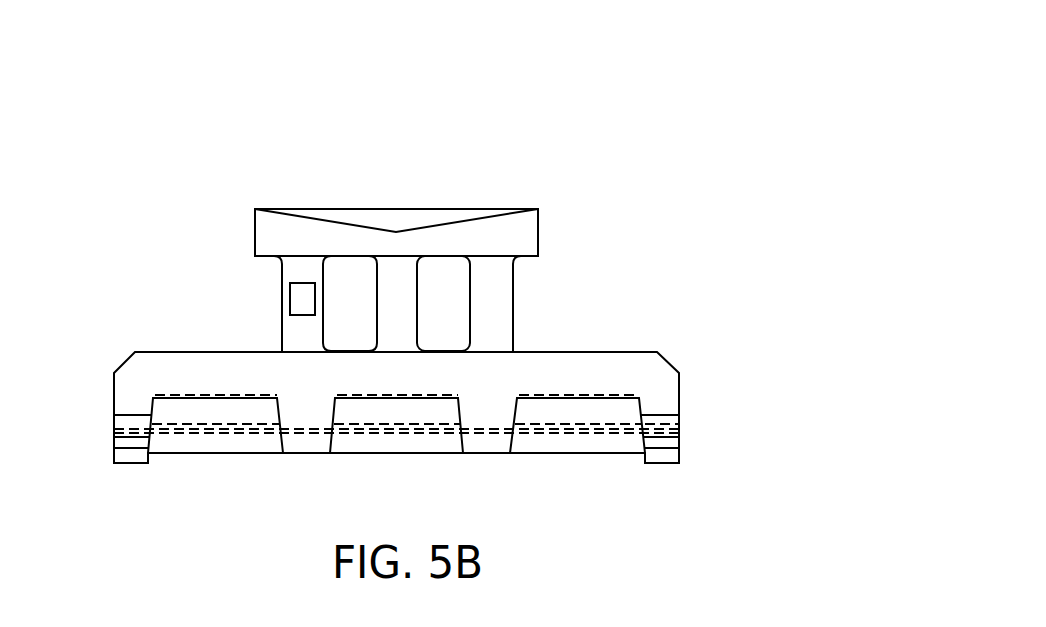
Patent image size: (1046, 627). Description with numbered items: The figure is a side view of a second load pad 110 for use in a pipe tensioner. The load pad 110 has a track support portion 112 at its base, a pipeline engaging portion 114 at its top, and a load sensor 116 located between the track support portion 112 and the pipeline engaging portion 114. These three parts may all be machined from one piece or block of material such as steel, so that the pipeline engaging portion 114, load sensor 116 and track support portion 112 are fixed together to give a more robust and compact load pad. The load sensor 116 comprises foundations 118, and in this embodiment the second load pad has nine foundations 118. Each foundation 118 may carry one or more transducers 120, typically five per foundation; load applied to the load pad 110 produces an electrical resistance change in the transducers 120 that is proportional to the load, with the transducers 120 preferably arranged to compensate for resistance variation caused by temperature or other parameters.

The second load pad 110 is at (492, 96).
The track support portion 112 is at (665, 393).
The pipeline engaging portion 114 is at (528, 231).
The load sensor 116 is at (566, 318).
The foundation 118 is at (300, 339).
The transducer 120 is at (303, 295).